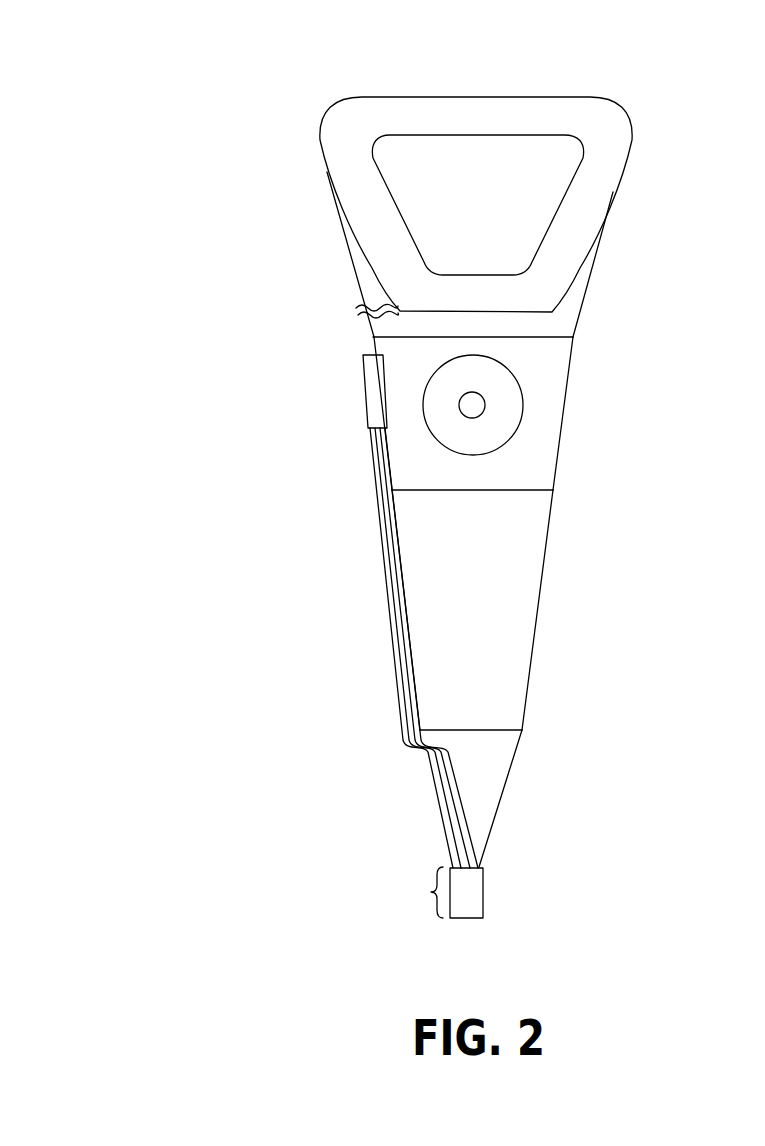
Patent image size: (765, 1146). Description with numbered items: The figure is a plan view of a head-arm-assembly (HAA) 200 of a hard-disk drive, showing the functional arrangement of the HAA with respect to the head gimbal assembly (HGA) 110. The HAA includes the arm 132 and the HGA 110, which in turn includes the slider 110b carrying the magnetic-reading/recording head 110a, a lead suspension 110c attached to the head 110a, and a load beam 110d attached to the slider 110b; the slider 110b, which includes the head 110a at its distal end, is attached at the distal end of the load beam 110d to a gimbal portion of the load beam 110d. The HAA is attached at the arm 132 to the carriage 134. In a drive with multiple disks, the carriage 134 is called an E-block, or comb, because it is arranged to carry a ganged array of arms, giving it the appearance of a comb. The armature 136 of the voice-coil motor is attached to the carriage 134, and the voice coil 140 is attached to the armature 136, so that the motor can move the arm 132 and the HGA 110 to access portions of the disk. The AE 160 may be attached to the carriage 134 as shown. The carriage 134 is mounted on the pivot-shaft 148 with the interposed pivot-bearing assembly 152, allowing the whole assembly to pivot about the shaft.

The handheld controller 200 is at (138, 80).
The voice coil 140 is at (373, 227).
The armature 136 is at (373, 290).
The carriage 134 is at (527, 458).
The arm 132 is at (467, 571).
The pivot-shaft 148 is at (472, 405).
The pivot-bearing assembly 152 is at (503, 417).
The AE 160 is at (374, 400).
The head gimbal assembly 110 is at (340, 673).
The magnetic-reading/recording head 110a is at (457, 908).
The slider 110b is at (437, 892).
The lead suspension 110c is at (443, 802).
The load beam 110d is at (468, 768).